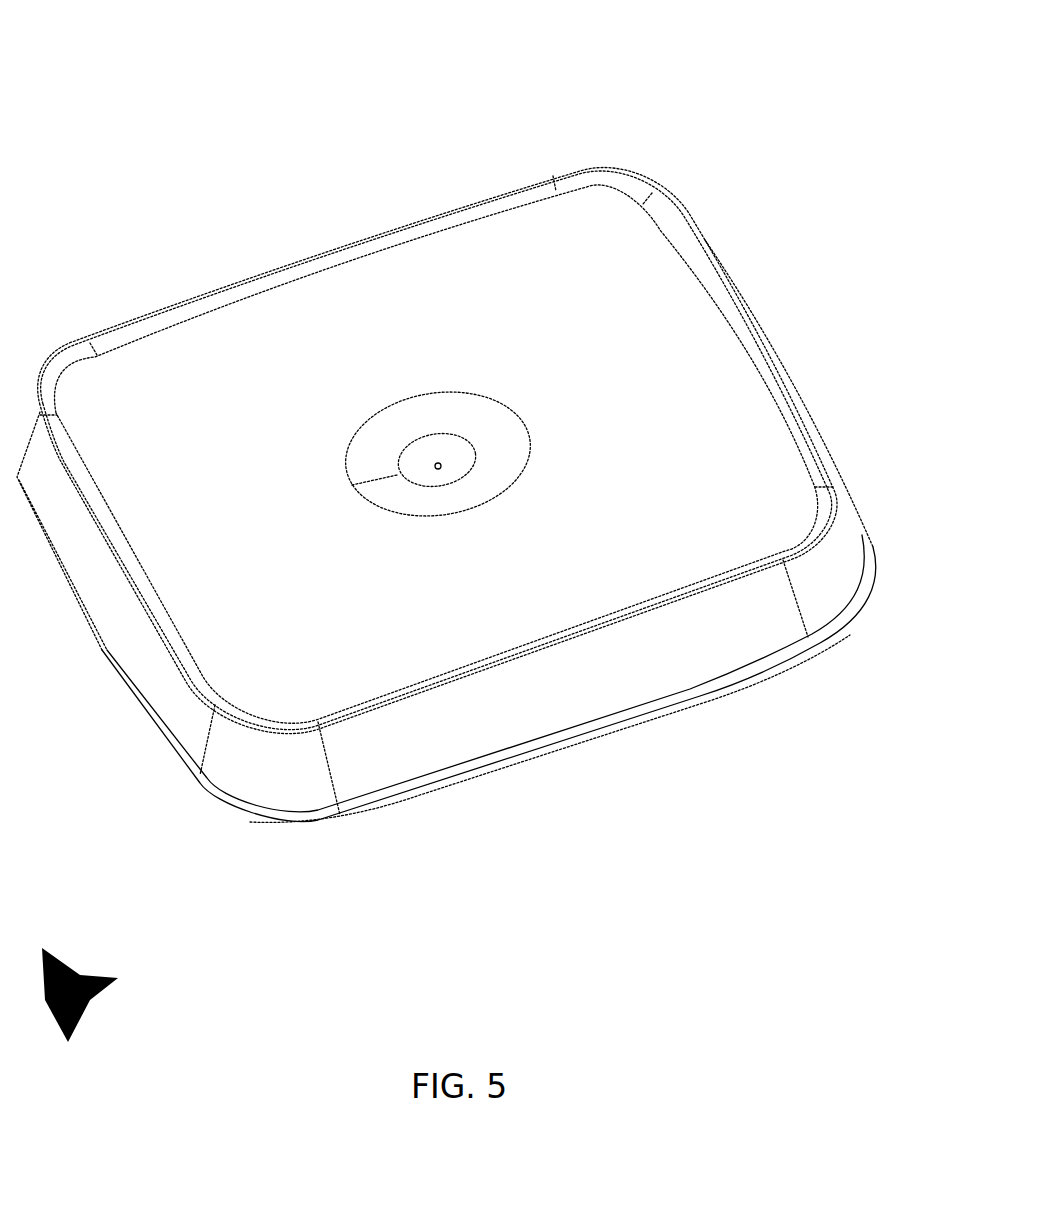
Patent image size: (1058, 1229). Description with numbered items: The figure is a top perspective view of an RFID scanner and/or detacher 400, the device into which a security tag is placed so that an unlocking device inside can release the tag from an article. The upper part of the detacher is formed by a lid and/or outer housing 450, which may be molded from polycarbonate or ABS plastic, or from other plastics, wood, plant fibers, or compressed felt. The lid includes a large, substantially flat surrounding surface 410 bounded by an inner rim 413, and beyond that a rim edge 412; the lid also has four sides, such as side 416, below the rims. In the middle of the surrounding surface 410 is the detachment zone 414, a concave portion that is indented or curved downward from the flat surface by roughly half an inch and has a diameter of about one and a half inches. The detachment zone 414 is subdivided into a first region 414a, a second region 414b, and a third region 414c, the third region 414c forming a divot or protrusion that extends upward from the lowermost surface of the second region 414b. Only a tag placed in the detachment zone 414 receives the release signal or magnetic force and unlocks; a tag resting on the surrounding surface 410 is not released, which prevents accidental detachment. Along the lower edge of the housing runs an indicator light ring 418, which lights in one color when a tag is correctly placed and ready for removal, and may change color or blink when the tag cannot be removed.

The detacher 400 is at (475, 481).
The surrounding surface 410 is at (465, 258).
The rim edge 412 is at (252, 277).
The inner rim 413 is at (135, 328).
The detachment zone 414 is at (636, 297).
The first region 414a is at (457, 388).
The second region 414b is at (458, 437).
The third region 414c is at (445, 463).
The side 416 is at (446, 557).
The indicator light ring 418 is at (268, 812).
The outer housing 450 is at (437, 378).